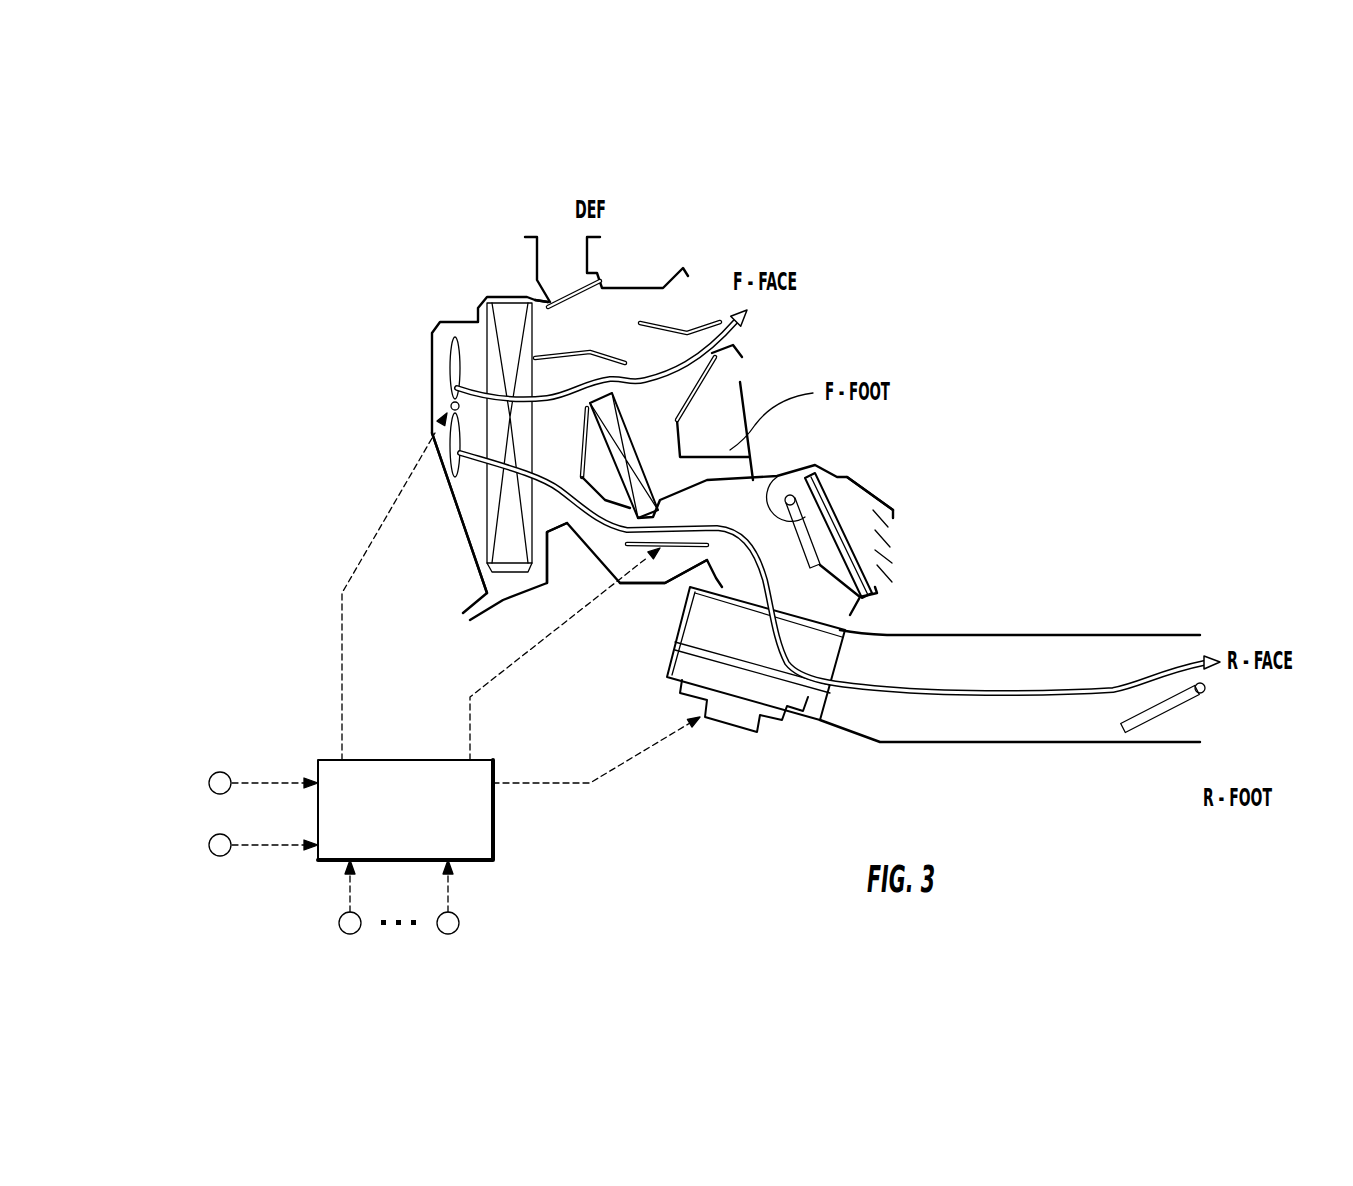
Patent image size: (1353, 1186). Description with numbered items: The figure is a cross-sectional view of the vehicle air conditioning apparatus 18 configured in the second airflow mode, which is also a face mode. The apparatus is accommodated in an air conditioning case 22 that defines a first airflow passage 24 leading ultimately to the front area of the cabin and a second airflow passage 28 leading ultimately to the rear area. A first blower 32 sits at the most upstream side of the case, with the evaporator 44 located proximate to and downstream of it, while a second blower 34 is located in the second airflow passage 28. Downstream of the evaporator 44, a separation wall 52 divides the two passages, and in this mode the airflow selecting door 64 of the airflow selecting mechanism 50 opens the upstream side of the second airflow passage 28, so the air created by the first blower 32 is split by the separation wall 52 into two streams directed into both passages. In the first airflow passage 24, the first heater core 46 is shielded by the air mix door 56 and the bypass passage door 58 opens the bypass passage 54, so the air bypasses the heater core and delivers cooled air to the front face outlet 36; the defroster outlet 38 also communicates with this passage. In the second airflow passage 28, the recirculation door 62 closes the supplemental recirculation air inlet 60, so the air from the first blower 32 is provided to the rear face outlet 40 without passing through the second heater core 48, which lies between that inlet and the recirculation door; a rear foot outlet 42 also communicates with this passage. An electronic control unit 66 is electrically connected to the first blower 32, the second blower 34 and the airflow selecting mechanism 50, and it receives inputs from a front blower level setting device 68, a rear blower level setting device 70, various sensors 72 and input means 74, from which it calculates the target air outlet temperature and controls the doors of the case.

The air conditioning apparatus 18 is at (833, 338).
The air conditioning case 22 is at (505, 293).
The first airflow passage 24 is at (561, 391).
The second airflow passage 28 is at (799, 575).
The first blower 32 is at (448, 357).
The second blower 34 is at (758, 688).
The front face outlet 36 is at (683, 287).
The defroster outlet 38 is at (538, 250).
The rear face outlet 40 is at (1188, 633).
The rear foot outlet 42 is at (1188, 742).
The evaporator 44 is at (487, 525).
The first heater core 46 is at (635, 453).
The second heater core 48 is at (845, 473).
The airflow selecting mechanism 50 is at (668, 578).
The separation wall 52 is at (590, 537).
The bypass passage 54 is at (618, 343).
The air mix door 56 is at (583, 453).
The bypass passage door 58 is at (548, 355).
The supplemental recirculation air inlet 60 is at (893, 518).
The recirculation door 62 is at (765, 480).
The airflow selecting door 64 is at (618, 587).
The electronic control unit 66 is at (493, 845).
The front blower level setting device 68 is at (208, 785).
The rear blower level setting device 70 is at (208, 847).
The sensors 72 is at (350, 935).
The input means 74 is at (448, 935).